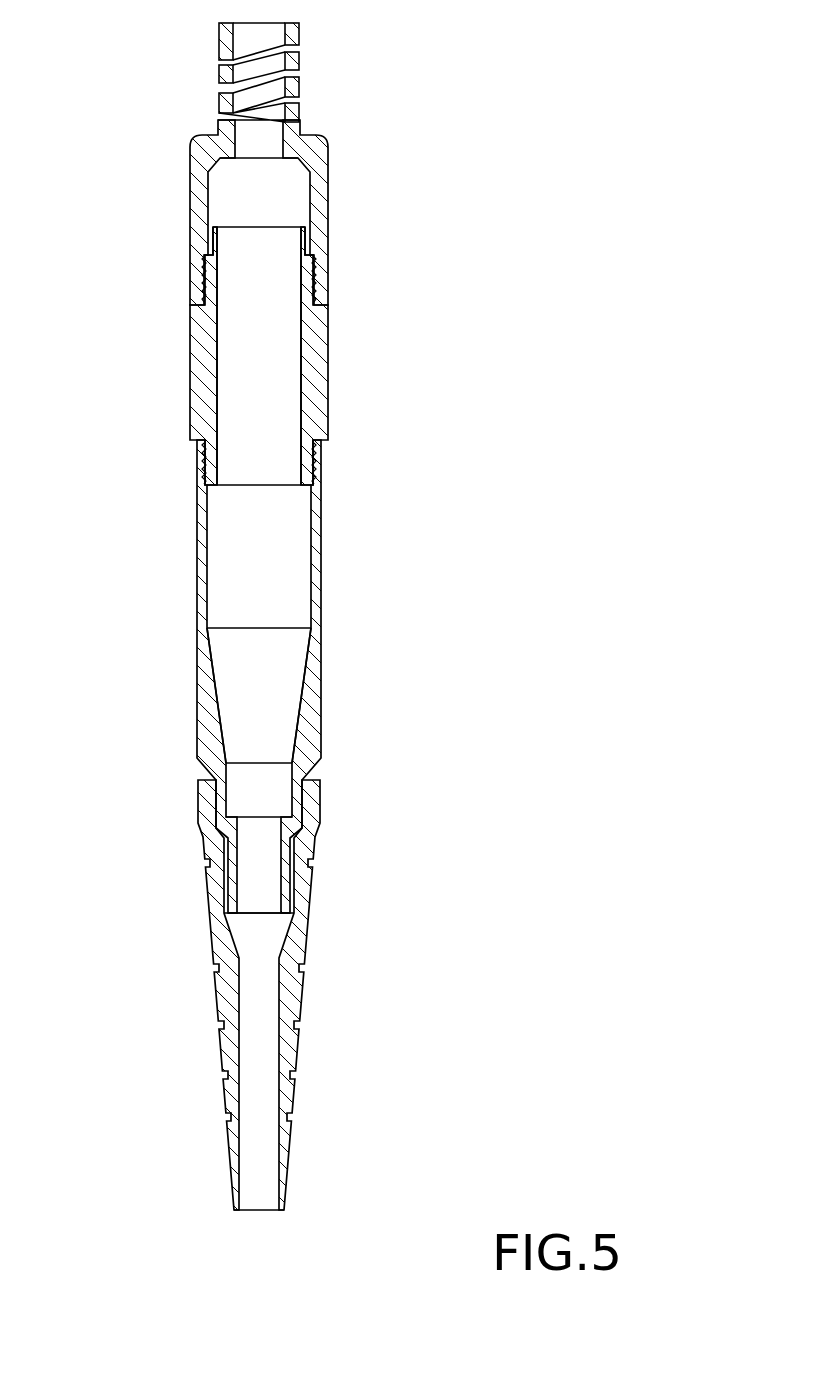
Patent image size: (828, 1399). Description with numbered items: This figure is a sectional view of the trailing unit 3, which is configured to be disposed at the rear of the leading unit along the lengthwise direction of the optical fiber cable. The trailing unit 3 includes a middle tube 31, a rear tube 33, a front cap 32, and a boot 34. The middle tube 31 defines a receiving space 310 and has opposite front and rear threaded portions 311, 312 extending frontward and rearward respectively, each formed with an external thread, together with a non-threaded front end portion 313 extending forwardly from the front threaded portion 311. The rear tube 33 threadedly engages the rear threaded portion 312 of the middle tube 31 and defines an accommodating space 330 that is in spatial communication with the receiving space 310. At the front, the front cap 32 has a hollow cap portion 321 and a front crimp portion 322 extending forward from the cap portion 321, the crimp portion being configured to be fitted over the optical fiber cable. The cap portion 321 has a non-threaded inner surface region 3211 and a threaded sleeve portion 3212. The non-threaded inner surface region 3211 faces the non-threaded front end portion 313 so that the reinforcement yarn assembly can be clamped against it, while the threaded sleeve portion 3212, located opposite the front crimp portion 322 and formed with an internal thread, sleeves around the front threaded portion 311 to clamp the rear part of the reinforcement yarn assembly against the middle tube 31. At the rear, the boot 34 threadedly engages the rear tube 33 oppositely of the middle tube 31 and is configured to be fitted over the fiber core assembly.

The trailing unit 3 is at (402, 497).
The middle tube 31 is at (343, 367).
The receiving space 310 is at (282, 334).
The front threaded portion 311 is at (200, 267).
The rear threaded portion 312 is at (202, 452).
The non-threaded front end portion 313 is at (209, 240).
The front cap 32 is at (350, 165).
The cap portion 321 is at (200, 198).
The non-threaded inner surface region 3211 is at (292, 230).
The threaded sleeve portion 3212 is at (312, 273).
The front crimp portion 322 is at (223, 42).
The rear tube 33 is at (315, 692).
The accommodating space 330 is at (235, 677).
The boot 34 is at (312, 913).